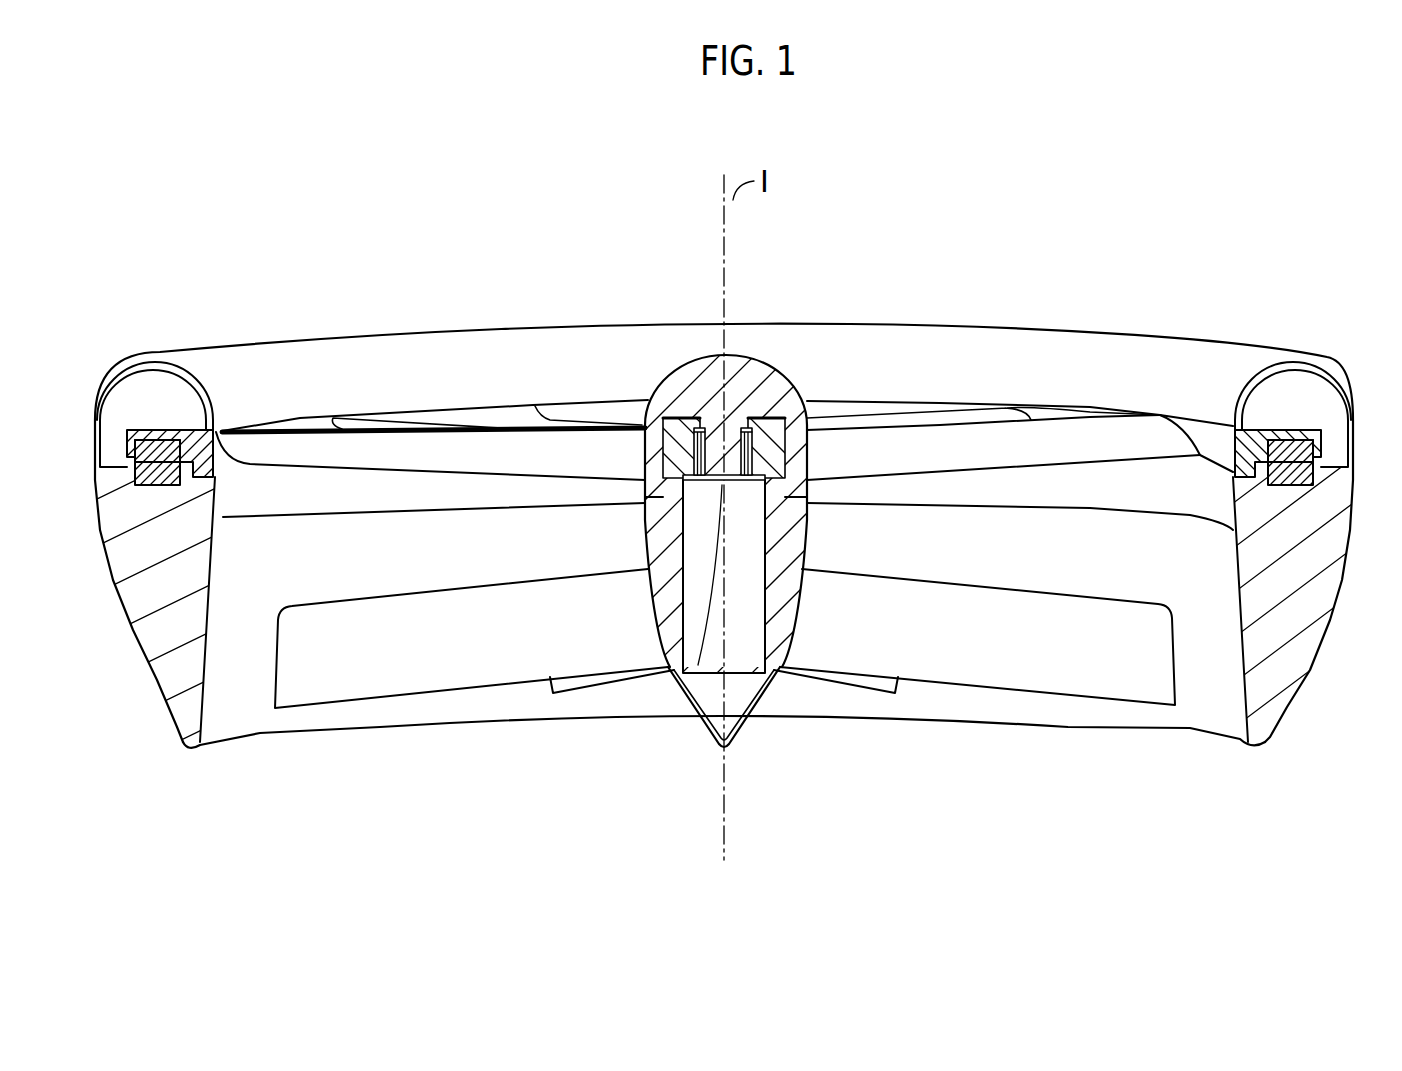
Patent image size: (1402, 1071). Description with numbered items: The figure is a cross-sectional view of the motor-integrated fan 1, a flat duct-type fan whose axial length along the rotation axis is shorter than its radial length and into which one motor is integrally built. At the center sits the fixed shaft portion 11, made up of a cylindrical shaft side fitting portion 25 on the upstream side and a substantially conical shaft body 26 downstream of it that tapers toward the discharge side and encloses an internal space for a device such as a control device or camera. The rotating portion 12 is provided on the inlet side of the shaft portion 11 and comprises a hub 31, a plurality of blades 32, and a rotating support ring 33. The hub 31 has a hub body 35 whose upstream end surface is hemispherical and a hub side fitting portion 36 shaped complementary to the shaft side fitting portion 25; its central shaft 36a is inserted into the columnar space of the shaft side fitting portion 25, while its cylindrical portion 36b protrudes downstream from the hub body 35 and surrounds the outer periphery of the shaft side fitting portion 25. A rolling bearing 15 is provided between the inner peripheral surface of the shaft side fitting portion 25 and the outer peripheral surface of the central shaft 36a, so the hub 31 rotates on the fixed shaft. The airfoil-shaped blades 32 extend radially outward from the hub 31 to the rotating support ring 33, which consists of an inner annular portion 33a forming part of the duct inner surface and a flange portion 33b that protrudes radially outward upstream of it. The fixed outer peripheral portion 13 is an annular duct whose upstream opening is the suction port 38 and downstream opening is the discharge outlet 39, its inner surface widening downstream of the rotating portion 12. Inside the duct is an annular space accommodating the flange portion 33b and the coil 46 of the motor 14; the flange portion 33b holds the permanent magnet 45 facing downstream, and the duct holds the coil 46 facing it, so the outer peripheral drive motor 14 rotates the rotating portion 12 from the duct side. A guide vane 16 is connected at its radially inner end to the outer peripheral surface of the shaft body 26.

The motor-integrated fan 1 is at (828, 242).
The shaft portion 11 is at (668, 684).
The rotating portion 12 is at (786, 358).
The outer peripheral portion 13 is at (306, 327).
The motor 14 is at (1348, 444).
The rolling bearing 15 is at (692, 446).
The guide vane 16 is at (1003, 668).
The shaft side fitting portion 25 is at (768, 425).
The shaft body 26 is at (784, 622).
The hub 31 is at (739, 343).
The blades 32 is at (434, 447).
The rotating support ring 33 is at (177, 418).
The inner annular portion 33a is at (203, 428).
The flange portion 33b is at (152, 412).
The hub body 35 is at (748, 415).
The hub side fitting portion 36 is at (636, 459).
The central shaft 36a is at (683, 593).
The cylindrical portion 36b is at (652, 556).
The suction port 38 is at (1030, 322).
The discharge outlet 39 is at (1088, 752).
The permanent magnet 45 is at (1291, 437).
The coil 46 is at (1290, 478).